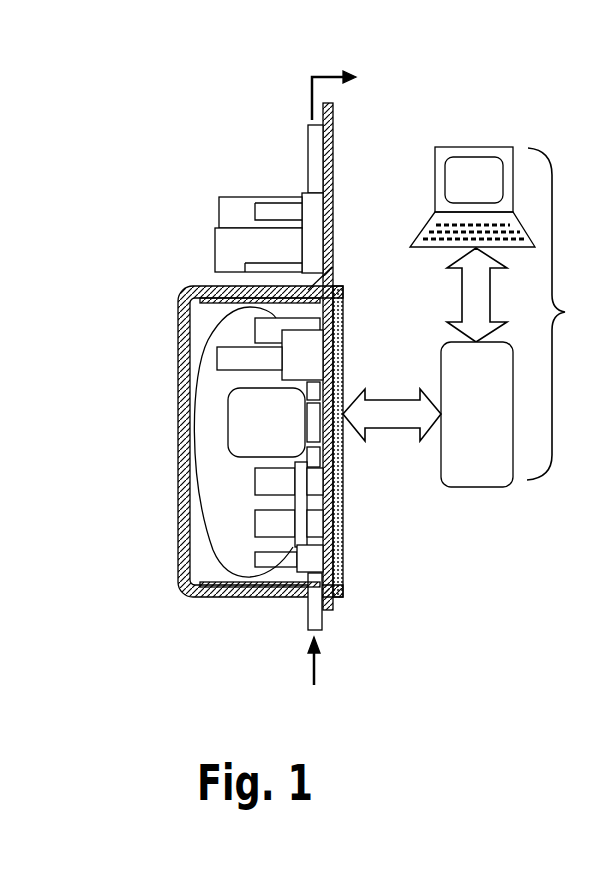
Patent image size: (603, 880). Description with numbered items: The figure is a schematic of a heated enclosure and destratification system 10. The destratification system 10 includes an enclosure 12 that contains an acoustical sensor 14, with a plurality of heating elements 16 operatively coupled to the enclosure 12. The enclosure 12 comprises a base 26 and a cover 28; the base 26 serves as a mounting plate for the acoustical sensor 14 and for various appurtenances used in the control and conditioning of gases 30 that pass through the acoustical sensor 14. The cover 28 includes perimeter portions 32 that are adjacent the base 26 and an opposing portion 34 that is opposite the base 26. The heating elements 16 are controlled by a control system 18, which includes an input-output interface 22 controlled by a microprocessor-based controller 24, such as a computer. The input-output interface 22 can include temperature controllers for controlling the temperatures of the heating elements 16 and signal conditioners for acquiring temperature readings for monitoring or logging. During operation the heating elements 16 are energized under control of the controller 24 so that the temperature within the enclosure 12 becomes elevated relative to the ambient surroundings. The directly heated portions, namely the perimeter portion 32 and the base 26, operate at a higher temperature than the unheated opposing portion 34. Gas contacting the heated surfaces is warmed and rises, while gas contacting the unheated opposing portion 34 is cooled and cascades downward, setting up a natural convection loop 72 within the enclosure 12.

The destratification system 10 is at (190, 131).
The enclosure 12 is at (170, 323).
The acoustical sensor 14 is at (266, 422).
The heating elements 16 is at (342, 294).
The control system 18 is at (524, 314).
The input-output (I/O) interface 22 is at (478, 490).
The microprocessor-based controller 24 is at (472, 197).
The base 26 is at (333, 172).
The cover 28 is at (170, 416).
The gases 30 is at (316, 673).
The perimeter portion 32 is at (218, 598).
The opposing portion 34 is at (178, 488).
The natural convection loop 72 is at (213, 549).